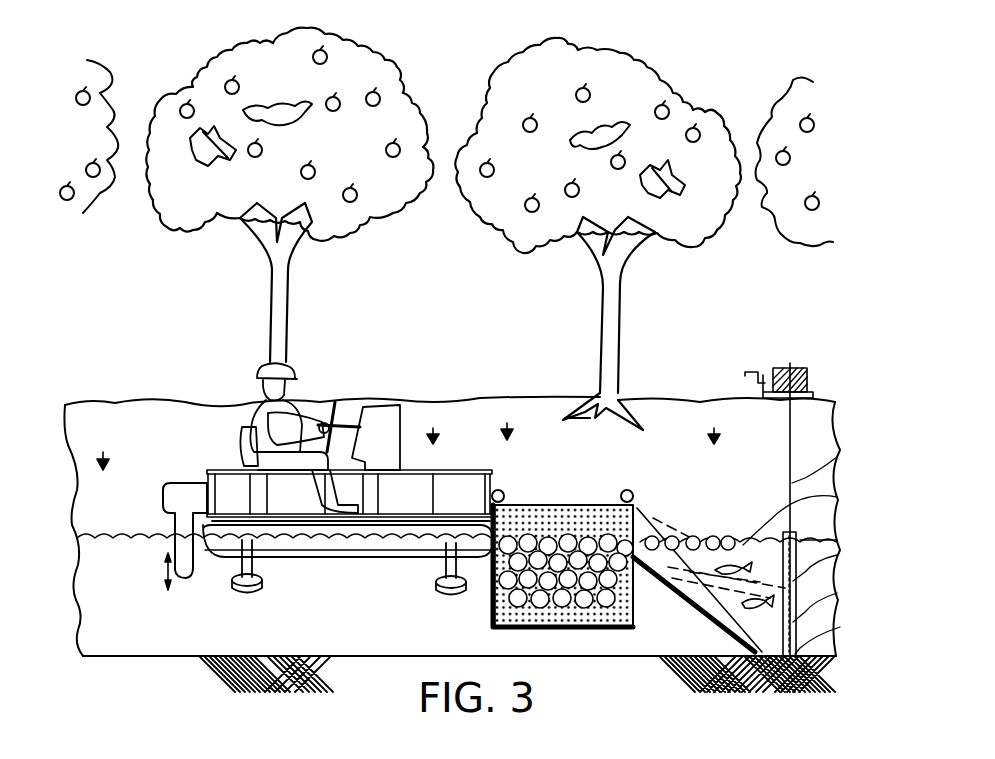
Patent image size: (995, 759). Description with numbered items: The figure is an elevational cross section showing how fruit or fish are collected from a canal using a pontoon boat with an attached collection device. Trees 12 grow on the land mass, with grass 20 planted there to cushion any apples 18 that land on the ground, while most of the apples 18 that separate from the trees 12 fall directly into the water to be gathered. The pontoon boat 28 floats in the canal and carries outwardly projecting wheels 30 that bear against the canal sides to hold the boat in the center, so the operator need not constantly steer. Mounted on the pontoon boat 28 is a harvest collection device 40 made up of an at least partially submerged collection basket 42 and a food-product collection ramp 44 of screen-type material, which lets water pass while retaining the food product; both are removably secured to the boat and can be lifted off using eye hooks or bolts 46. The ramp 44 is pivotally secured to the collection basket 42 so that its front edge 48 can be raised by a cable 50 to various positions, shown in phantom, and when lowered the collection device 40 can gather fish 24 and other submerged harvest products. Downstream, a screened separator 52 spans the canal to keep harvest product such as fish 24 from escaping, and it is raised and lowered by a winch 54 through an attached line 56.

The trees 12 is at (373, 52).
The apples 18 is at (400, 148).
The grass 20 is at (440, 386).
The fish 24 is at (838, 495).
The pontoon boat 28 is at (180, 460).
The wheels 30 is at (255, 588).
The harvest collection device 40 is at (687, 440).
The collection basket 42 is at (577, 537).
The food-product collection ramp 44 is at (693, 543).
The eye hooks or bolts 46 is at (497, 490).
The front edge 48 is at (840, 553).
The cable 50 is at (840, 592).
The screened separator 52 is at (840, 527).
The winch 54 is at (791, 363).
The line 56 is at (840, 455).